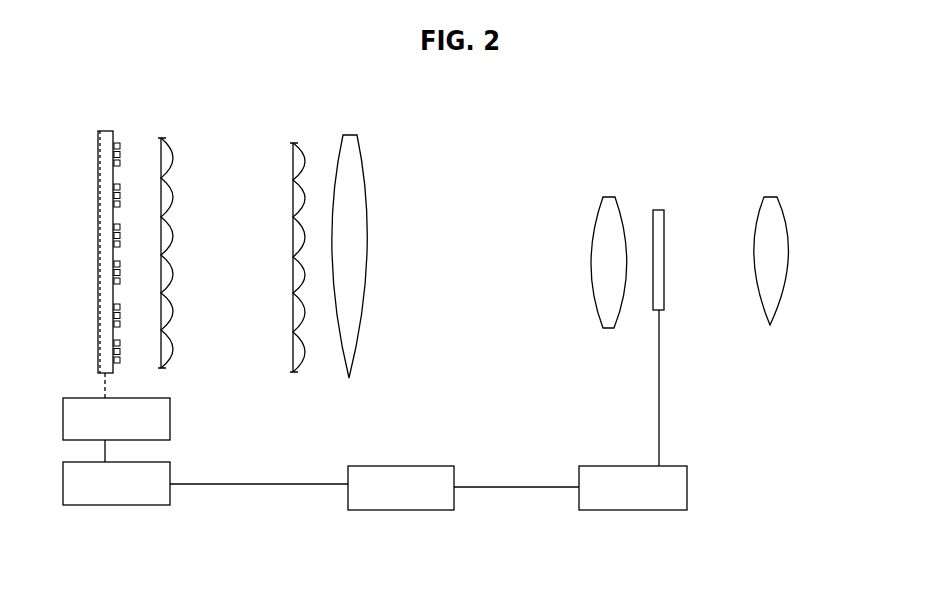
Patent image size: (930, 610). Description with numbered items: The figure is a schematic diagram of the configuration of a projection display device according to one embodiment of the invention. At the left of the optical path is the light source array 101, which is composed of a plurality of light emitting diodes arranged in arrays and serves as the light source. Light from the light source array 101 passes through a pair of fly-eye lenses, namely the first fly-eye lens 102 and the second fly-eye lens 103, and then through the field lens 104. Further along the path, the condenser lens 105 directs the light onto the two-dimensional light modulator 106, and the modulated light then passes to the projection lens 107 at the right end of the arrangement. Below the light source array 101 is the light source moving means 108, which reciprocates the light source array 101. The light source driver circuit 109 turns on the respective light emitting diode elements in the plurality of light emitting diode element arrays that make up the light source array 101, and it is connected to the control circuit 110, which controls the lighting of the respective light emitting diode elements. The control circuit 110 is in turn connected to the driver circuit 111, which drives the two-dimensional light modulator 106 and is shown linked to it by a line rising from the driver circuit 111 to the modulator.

The light source array 101 is at (112, 134).
The first fly-eye lens 102 is at (168, 142).
The second fly-eye lens 103 is at (302, 149).
The field lens 104 is at (349, 380).
The condenser lens 105 is at (607, 197).
The two-dimensional light modulator 106 is at (659, 210).
The projection lens 107 is at (770, 326).
The light source moving means 108 is at (160, 428).
The light source driver circuit 109 is at (74, 495).
The control circuit 110 is at (440, 500).
The driver circuit 111 is at (670, 500).